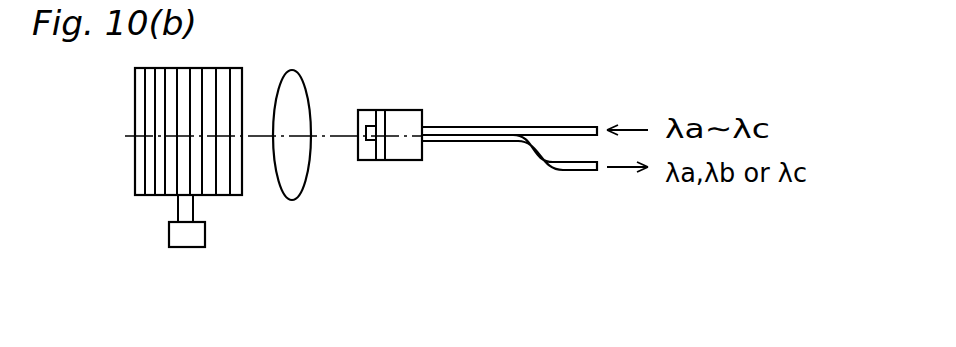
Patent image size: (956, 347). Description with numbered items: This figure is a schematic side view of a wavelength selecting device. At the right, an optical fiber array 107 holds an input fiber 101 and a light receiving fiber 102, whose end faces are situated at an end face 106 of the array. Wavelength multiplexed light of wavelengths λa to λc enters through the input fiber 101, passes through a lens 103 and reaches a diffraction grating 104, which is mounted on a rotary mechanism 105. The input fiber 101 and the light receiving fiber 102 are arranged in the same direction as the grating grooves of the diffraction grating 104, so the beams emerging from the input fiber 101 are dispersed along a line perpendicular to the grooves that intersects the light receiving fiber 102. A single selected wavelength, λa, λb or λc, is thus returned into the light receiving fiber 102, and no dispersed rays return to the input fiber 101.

The input fiber 101 is at (560, 127).
The light receiving fiber 102 is at (567, 172).
The lens 103 is at (292, 188).
The diffraction grating 104 is at (152, 63).
The rotary mechanism 105 is at (185, 247).
The end face 106 is at (375, 147).
The optical fiber array 107 is at (413, 117).